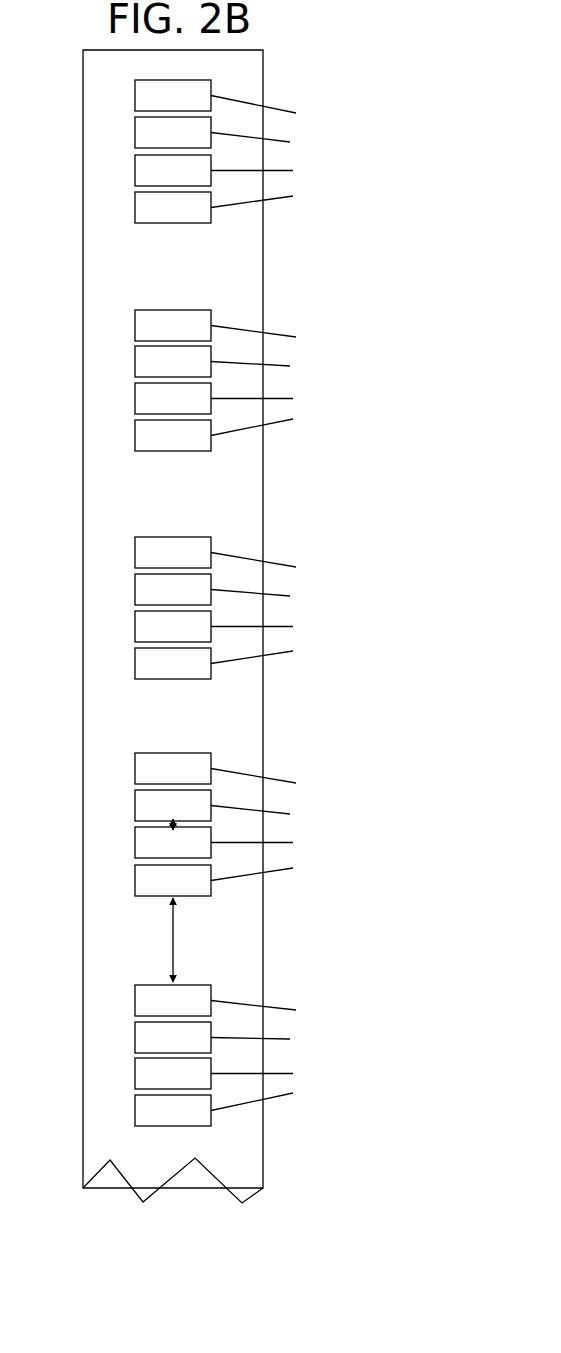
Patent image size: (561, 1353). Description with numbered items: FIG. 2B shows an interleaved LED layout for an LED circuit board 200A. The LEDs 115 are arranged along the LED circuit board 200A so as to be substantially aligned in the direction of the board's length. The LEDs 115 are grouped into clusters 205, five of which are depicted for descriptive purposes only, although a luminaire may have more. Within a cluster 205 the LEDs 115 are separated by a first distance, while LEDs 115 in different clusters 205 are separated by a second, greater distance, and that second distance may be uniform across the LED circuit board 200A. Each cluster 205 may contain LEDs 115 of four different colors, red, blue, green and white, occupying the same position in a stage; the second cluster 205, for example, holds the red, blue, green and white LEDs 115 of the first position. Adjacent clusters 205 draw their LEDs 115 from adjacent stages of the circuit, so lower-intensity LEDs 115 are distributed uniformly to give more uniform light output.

The LED circuit board 200A is at (228, 626).
The cluster 205 is at (282, 603).
The LED 115 is at (173, 603).